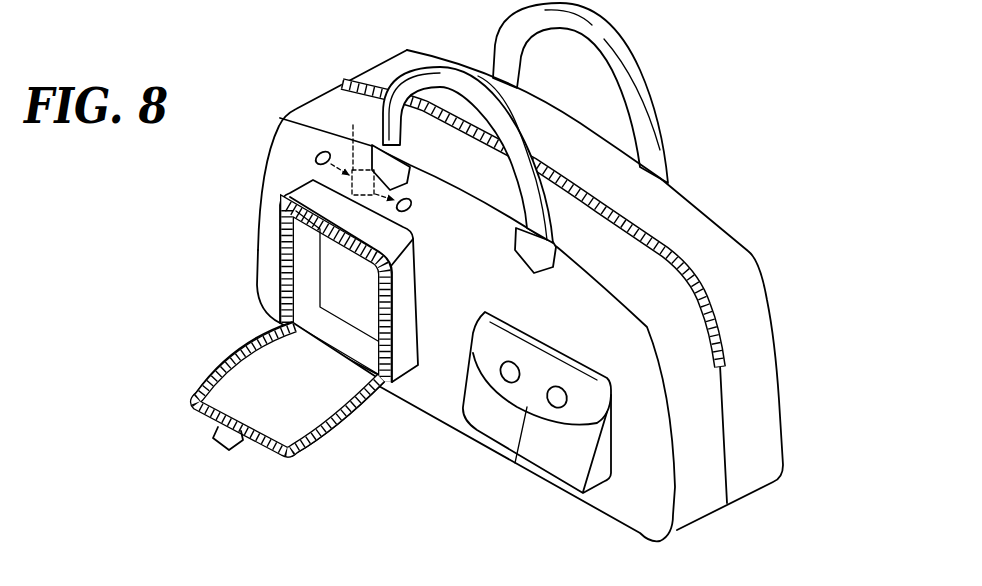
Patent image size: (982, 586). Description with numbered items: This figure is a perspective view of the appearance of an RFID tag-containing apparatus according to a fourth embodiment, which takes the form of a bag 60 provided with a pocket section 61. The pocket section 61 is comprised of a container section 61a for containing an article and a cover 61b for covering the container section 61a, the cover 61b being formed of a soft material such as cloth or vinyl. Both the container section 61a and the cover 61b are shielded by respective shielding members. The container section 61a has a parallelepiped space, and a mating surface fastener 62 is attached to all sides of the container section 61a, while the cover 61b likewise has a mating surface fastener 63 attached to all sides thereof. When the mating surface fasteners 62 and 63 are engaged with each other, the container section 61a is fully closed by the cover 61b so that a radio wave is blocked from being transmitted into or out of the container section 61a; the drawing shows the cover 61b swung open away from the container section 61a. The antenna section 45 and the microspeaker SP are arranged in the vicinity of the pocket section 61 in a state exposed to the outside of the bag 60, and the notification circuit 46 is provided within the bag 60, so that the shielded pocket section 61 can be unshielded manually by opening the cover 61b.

The antenna section 45 is at (317, 152).
The notification circuit 46 is at (370, 147).
The microspeaker SP is at (412, 211).
The bag 60 is at (799, 317).
The pocket section 61 is at (329, 322).
The container section 61a is at (407, 287).
The cover 61b is at (340, 418).
The mating surface fastener 62 is at (388, 329).
The mating surface fastener 63 is at (296, 387).